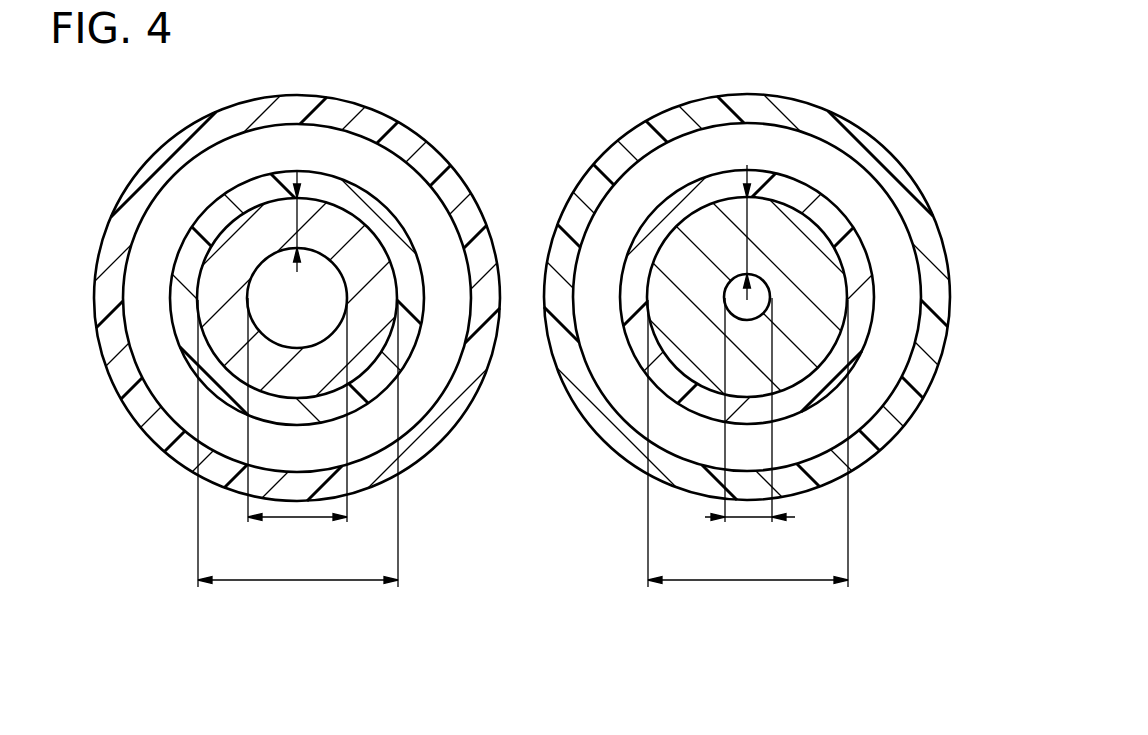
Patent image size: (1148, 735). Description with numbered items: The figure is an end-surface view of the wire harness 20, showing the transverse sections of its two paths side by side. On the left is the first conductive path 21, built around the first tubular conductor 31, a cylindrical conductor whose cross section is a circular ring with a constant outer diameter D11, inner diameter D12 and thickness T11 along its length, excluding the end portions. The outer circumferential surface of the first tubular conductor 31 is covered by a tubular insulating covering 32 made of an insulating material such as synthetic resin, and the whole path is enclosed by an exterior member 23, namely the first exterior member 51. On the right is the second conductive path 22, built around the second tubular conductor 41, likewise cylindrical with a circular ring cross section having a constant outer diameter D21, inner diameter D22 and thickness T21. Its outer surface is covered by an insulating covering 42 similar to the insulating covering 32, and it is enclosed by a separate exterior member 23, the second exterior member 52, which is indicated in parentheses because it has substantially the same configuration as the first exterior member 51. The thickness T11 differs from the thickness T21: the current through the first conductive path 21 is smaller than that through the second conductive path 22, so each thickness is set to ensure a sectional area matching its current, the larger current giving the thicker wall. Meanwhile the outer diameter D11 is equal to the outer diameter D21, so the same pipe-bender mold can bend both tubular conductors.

The wire harness 20 is at (877, 63).
The first conductive path 21 is at (380, 193).
The second conductive path 22 is at (833, 203).
The exterior member 23 is at (522, 287).
The first exterior member 51 is at (160, 162).
The second exterior member 52 is at (612, 162).
The first tubular conductor 31 is at (383, 288).
The insulating covering 32 is at (190, 253).
The second tubular conductor 41 is at (673, 250).
The insulating covering 42 is at (863, 312).
The thickness of the first tubular conductor T11 is at (304, 209).
The thickness of the second tubular conductor T21 is at (755, 216).
The outer diameter of the first tubular conductor D11 is at (299, 583).
The inner diameter of the first tubular conductor D12 is at (299, 520).
The outer diameter of the second tubular conductor D21 is at (749, 583).
The inner diameter of the second tubular conductor D22 is at (749, 520).